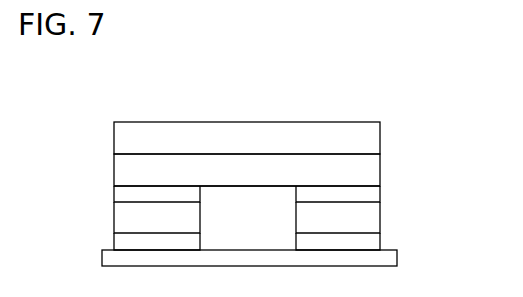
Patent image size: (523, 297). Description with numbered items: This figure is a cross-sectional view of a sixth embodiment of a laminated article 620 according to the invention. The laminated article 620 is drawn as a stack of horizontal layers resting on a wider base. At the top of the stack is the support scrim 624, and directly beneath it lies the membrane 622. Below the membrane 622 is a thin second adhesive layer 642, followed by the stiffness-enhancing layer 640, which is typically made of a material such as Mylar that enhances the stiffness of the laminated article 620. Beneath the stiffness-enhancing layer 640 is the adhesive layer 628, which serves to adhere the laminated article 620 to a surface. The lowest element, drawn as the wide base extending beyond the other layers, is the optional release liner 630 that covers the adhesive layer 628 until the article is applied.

The laminated article 620 is at (206, 90).
The support scrim 624 is at (380, 140).
The membrane 622 is at (380, 172).
The second adhesive layer 642 is at (380, 197).
The stiffness-enhancing layer 640 is at (380, 217).
The adhesive layer 628 is at (380, 240).
The release liner 630 is at (397, 255).